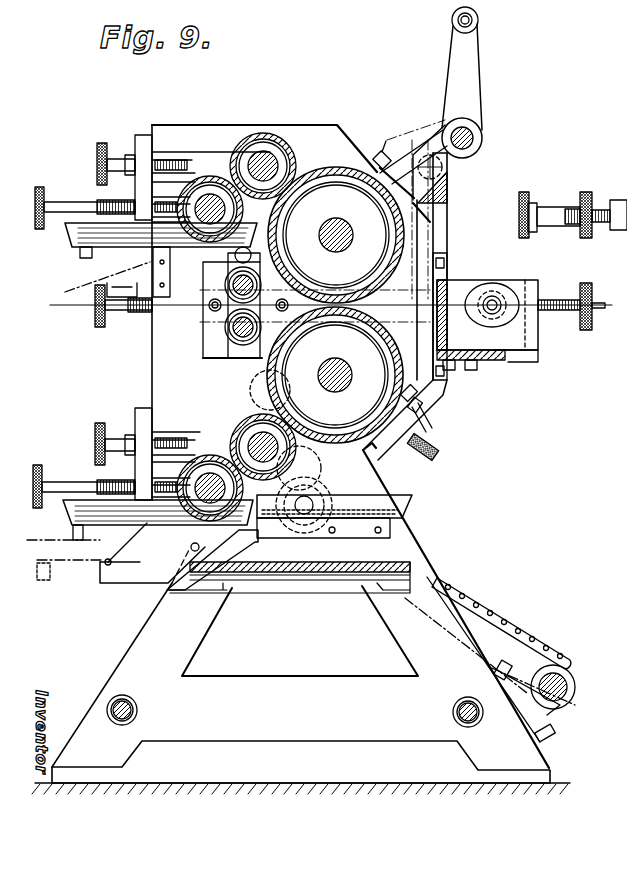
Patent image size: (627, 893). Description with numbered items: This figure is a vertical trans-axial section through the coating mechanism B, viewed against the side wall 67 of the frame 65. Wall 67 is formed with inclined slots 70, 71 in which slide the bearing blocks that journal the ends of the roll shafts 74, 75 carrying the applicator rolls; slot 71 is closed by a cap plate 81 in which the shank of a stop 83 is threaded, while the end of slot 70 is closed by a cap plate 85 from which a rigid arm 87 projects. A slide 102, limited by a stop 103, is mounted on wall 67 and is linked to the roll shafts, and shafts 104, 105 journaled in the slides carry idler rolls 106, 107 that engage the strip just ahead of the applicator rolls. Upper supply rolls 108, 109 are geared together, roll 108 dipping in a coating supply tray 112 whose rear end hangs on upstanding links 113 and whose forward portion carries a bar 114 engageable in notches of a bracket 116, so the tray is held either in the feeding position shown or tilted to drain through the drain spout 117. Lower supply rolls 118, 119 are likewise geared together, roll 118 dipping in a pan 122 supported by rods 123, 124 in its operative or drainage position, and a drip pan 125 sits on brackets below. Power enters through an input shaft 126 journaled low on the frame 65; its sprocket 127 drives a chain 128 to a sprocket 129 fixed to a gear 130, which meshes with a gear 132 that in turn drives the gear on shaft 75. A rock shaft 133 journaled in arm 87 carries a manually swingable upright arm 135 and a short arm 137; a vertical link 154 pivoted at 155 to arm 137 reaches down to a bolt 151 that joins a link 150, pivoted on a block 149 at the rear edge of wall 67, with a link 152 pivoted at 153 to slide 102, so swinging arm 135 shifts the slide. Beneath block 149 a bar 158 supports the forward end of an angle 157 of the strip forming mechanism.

The frame 65 is at (424, 556).
The side wall 67 is at (330, 135).
The slot 70 is at (393, 166).
The slot 71 is at (420, 401).
The shaft 74 is at (348, 233).
The shaft 75 is at (335, 393).
The cap plate 81 is at (425, 417).
The stop 83 is at (432, 446).
The cap plate 85 is at (385, 148).
The rigid arm 87 is at (429, 140).
The slide 102 is at (212, 320).
The stop 103 is at (140, 312).
The shaft 104 is at (238, 297).
The shaft 105 is at (236, 332).
The idler roll 106 is at (240, 280).
The idler roll 107 is at (236, 338).
The supply roll 108 is at (208, 176).
The supply roll 109 is at (283, 140).
The coating supply tray 112 is at (72, 237).
The upstanding links 113 is at (258, 260).
The bar 114 is at (148, 262).
The bracket 116 is at (107, 290).
The drain spout 117 is at (80, 254).
The lower supply roll 118 is at (210, 454).
The lower supply roll 119 is at (262, 414).
The pan 122 is at (68, 518).
The rod 123 is at (110, 560).
The rod 124 is at (298, 540).
The drip pan 125 is at (414, 511).
The power input shaft 126 is at (573, 668).
The sprocket 127 is at (556, 650).
The chain 128 is at (478, 611).
The sprocket 129 is at (316, 540).
The gear 130 is at (322, 488).
The gear 132 is at (258, 380).
The rock shaft 133 is at (478, 140).
The upright arm 135 is at (470, 104).
The short arm 137 is at (453, 183).
The block 149 is at (478, 292).
The link 150 is at (457, 290).
The bolt 151 is at (452, 278).
The link 152 is at (398, 313).
The pivot 153 is at (312, 292).
The vertical link 154 is at (445, 199).
The pivot 155 is at (443, 168).
The angle 157 is at (573, 215).
The bar 158 is at (508, 353).
The coating mechanism B is at (293, 100).